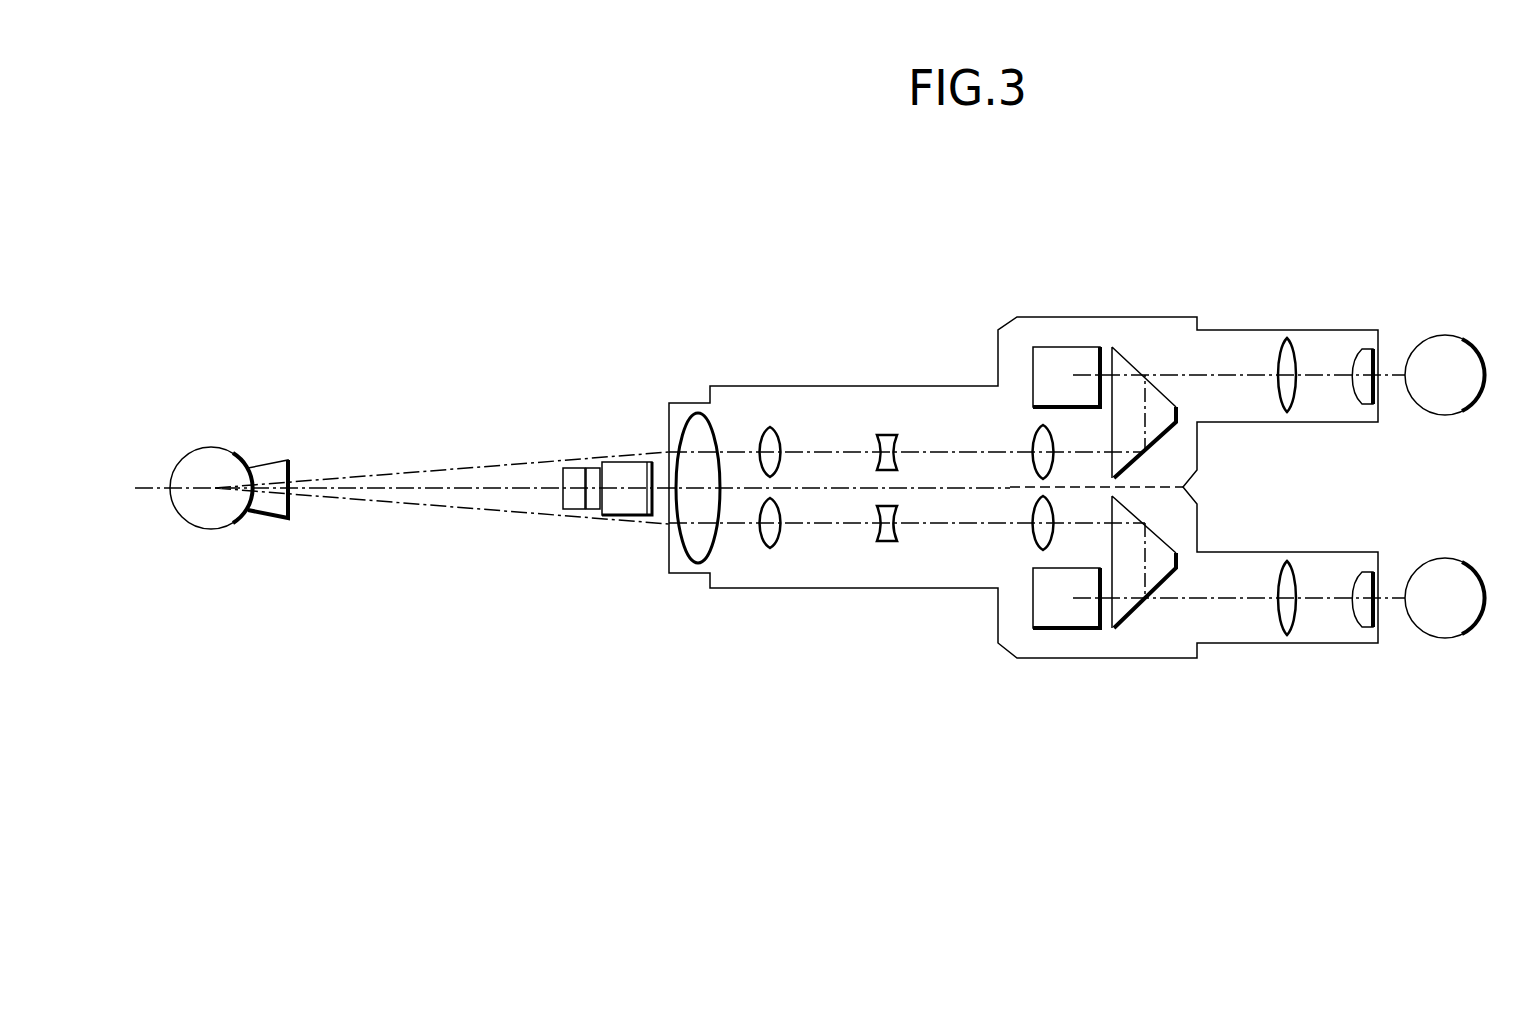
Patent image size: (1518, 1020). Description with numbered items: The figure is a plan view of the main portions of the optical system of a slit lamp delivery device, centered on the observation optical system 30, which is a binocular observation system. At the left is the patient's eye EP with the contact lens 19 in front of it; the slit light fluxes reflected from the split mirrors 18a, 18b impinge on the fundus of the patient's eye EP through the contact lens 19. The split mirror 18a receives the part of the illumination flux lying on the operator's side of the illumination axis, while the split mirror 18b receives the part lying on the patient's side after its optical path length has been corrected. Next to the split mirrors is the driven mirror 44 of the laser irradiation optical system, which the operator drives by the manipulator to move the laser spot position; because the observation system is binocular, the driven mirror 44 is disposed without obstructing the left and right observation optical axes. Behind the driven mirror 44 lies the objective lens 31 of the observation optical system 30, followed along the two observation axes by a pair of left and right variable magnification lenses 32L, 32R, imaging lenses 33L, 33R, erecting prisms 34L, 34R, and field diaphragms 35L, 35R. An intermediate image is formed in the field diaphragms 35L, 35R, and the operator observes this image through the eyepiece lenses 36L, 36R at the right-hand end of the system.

The patient's eye EP is at (210, 528).
The contact lens 19 is at (270, 515).
The split mirror 18a is at (593, 505).
The split mirror 18b is at (575, 470).
The driven mirror 44 is at (633, 470).
The observation optical system 30 is at (832, 280).
The objective lens 31 is at (698, 560).
The variable magnification lens 32R is at (903, 410).
The variable magnification lens 32L is at (903, 562).
The imaging lens 33R is at (1037, 440).
The imaging lens 33L is at (1037, 545).
The erecting prism 34R is at (1183, 343).
The erecting prism 34L is at (1183, 630).
The field diaphragm 35R is at (1253, 422).
The field diaphragm 35L is at (1255, 560).
The eyepiece lens 36R is at (1375, 320).
The eyepiece lens 36L is at (1375, 649).